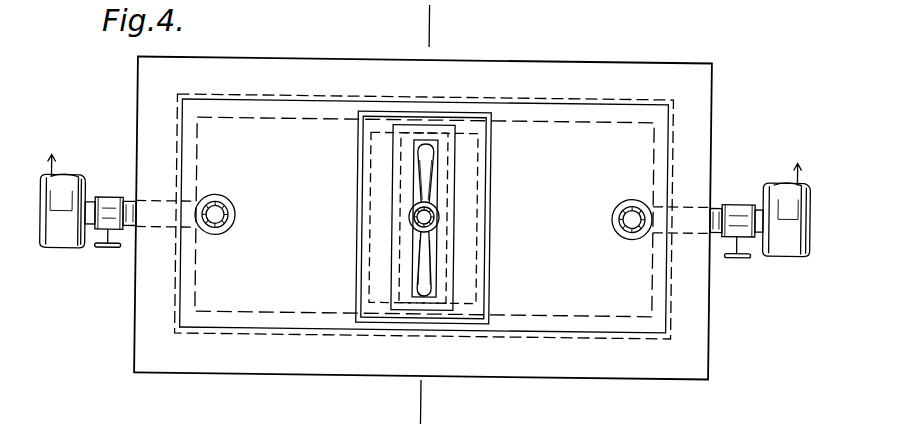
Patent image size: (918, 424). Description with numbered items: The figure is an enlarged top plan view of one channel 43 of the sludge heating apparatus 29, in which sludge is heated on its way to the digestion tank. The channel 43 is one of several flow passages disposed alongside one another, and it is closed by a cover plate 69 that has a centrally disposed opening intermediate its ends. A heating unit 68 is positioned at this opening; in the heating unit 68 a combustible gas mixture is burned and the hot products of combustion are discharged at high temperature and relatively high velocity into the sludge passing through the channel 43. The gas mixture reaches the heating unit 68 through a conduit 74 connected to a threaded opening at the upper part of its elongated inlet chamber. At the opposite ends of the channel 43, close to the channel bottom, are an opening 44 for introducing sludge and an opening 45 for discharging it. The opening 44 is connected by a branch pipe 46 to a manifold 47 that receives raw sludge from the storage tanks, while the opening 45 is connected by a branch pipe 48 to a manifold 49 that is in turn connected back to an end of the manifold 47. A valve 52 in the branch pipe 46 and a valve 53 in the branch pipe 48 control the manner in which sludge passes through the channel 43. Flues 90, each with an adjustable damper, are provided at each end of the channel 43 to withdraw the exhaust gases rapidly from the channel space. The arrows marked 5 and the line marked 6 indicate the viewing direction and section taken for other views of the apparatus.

The view direction arrows for FIG. 5 is at (424, 203).
The section line 6- 6 is at (418, 26).
The heating apparatus 29 is at (725, 63).
The channel 43 is at (613, 318).
The opening 44 is at (152, 232).
The opening 45 is at (690, 232).
The branch pipe 46 is at (130, 201).
The manifold 47 is at (62, 231).
The branch pipe 48 is at (716, 205).
The manifold 49 is at (785, 243).
The valve 52 is at (107, 252).
The valve 53 is at (740, 264).
The heating unit 68 is at (377, 290).
The cover plate 69 is at (550, 293).
The conduit 74 is at (440, 217).
The flue 90 is at (222, 227).